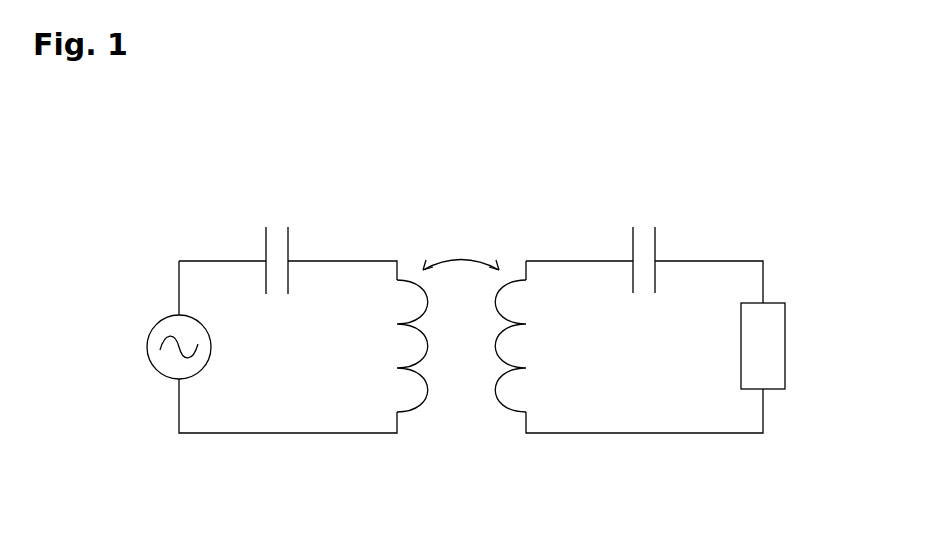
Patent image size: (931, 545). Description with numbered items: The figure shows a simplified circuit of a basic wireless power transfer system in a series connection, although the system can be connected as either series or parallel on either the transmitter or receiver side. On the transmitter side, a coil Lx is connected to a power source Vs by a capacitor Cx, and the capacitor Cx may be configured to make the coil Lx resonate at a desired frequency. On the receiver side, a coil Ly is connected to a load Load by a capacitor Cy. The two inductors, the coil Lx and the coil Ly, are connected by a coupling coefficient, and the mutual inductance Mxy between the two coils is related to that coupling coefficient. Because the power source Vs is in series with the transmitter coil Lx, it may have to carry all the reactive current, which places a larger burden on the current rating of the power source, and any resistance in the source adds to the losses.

The power source Vs is at (157, 347).
The capacitor Cx is at (277, 248).
The coil Lx is at (410, 317).
The mutual inductance Mxy is at (461, 251).
The coil Ly is at (513, 315).
The capacitor Cy is at (647, 244).
The load Load is at (793, 346).